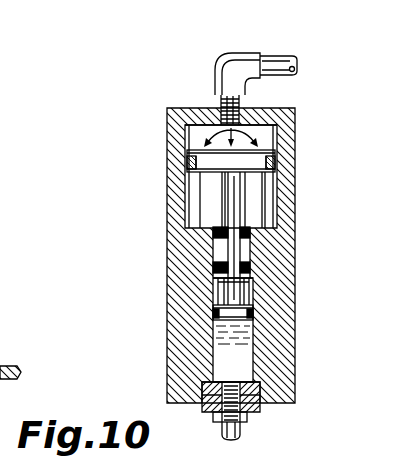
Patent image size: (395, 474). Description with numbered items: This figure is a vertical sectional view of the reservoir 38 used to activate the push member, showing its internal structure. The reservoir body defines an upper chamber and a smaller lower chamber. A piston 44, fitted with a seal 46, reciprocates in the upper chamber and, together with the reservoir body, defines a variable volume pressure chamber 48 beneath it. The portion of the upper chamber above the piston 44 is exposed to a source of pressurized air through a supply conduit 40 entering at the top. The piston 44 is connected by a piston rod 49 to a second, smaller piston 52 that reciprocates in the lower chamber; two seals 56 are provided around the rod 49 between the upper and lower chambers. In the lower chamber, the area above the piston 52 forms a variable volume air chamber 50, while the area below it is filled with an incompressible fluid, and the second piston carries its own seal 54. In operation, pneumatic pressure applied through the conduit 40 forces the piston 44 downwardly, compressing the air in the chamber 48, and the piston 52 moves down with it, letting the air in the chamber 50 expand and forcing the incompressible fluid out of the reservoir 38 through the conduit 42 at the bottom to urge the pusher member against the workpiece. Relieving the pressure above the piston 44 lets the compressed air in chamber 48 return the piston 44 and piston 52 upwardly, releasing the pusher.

The reservoir 38 is at (155, 170).
The supply conduit 40 is at (237, 53).
The conduit 42 is at (242, 432).
The piston 44 is at (262, 192).
The seal 46 is at (275, 162).
The variable volume pressure chamber 48 is at (205, 198).
The piston rod 49 is at (232, 246).
The variable volume air chamber 50 is at (255, 290).
The second piston 52 is at (216, 304).
The seal 54 is at (258, 312).
The seals 56 is at (250, 265).